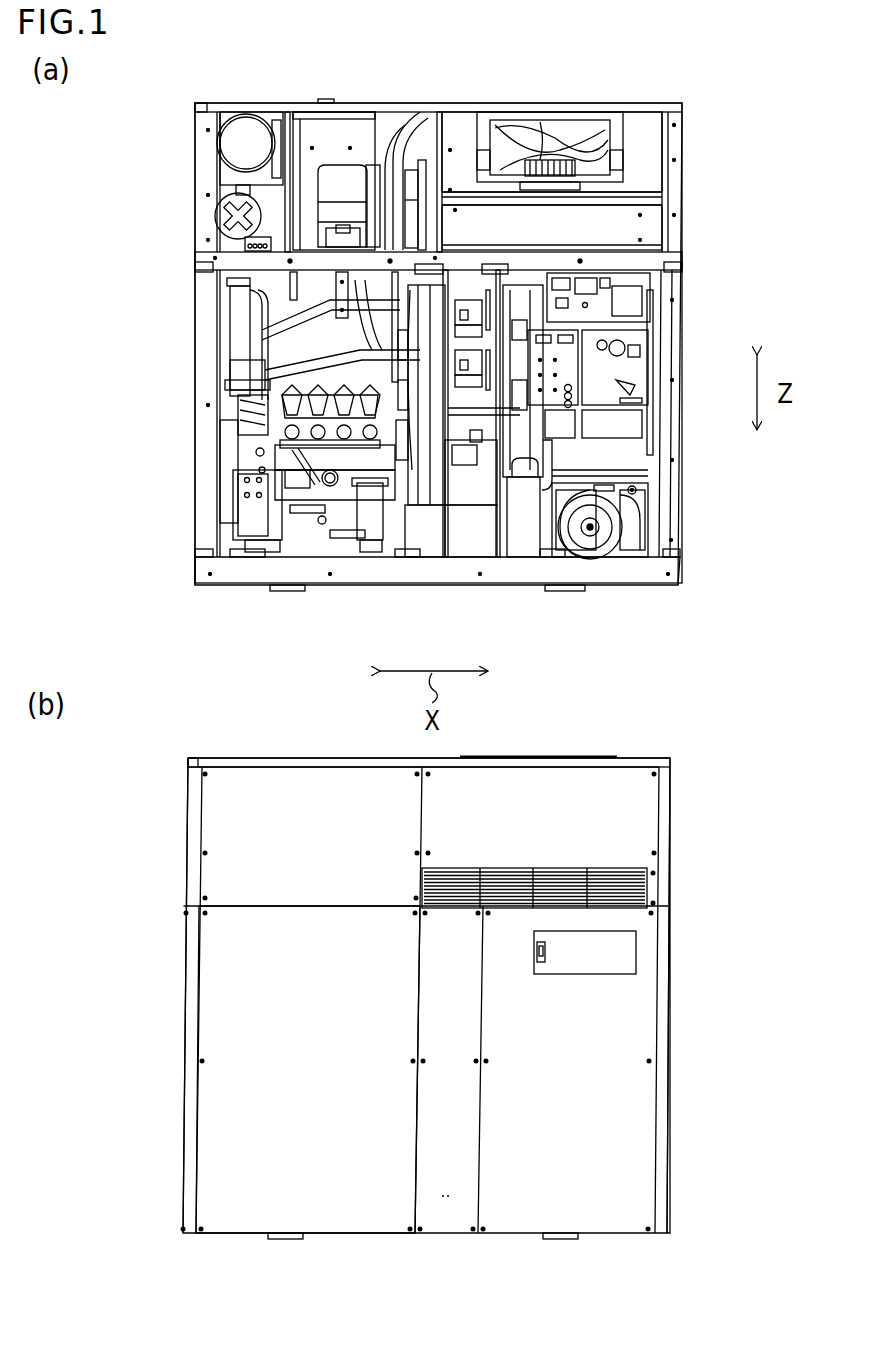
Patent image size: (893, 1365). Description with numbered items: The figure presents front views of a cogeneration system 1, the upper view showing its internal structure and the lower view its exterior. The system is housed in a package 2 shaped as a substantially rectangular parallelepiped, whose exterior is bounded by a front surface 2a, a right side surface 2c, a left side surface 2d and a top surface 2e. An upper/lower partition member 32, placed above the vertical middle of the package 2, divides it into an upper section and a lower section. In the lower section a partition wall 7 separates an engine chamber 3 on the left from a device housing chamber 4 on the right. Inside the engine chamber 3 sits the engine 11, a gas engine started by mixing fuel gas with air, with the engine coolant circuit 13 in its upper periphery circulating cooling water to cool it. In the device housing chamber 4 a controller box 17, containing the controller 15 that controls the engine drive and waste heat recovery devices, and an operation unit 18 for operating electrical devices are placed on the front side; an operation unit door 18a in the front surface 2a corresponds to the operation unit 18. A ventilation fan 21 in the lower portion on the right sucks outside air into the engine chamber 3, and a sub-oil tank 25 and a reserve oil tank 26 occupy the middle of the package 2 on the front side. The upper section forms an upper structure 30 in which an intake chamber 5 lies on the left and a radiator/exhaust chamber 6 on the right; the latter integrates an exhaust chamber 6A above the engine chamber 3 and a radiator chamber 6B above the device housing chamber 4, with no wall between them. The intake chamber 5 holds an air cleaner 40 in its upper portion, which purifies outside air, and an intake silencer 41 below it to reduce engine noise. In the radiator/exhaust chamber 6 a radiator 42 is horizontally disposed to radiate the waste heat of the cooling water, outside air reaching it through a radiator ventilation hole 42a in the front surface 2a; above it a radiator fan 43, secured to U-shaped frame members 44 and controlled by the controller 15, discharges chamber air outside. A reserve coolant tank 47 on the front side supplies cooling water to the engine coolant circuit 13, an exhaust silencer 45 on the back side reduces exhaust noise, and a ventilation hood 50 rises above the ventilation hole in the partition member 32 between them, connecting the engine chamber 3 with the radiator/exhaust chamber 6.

The cogeneration system 1 is at (672, 82).
The package 2 is at (676, 178).
The front surface 2a is at (230, 1168).
The right side surface 2c is at (668, 1030).
The left side surface 2d is at (190, 988).
The top surface 2e is at (262, 757).
The engine chamber 3 is at (225, 438).
The device housing chamber 4 is at (633, 490).
The intake chamber 5 is at (278, 117).
The radiator/exhaust chamber 6 is at (447, 142).
The exhaust chamber 6A is at (373, 127).
The radiator chamber 6B is at (467, 130).
The partition wall 7 is at (440, 462).
The engine 11 is at (313, 460).
The engine coolant circuit 13 is at (262, 318).
The controller 15 is at (640, 442).
The controller box 17 is at (540, 517).
The operation unit 18 is at (633, 303).
The operation unit door 18a is at (628, 955).
The ventilation fan 21 is at (617, 510).
The sub-oil tank 25 is at (457, 530).
The reserve oil tank 26 is at (385, 505).
The upper structure 30 is at (685, 100).
The upper/lower partition member 32 is at (660, 268).
The air cleaner 40 is at (242, 132).
The intake silencer 41 is at (220, 213).
The radiator 42 is at (640, 200).
The radiator ventilation hole 42a is at (650, 880).
The radiator fan 43 is at (582, 127).
The U-shaped frame members 44 is at (620, 148).
The exhaust silencer 45 is at (335, 128).
The reserve coolant tank 47 is at (337, 148).
The ventilation hood 50 is at (365, 150).